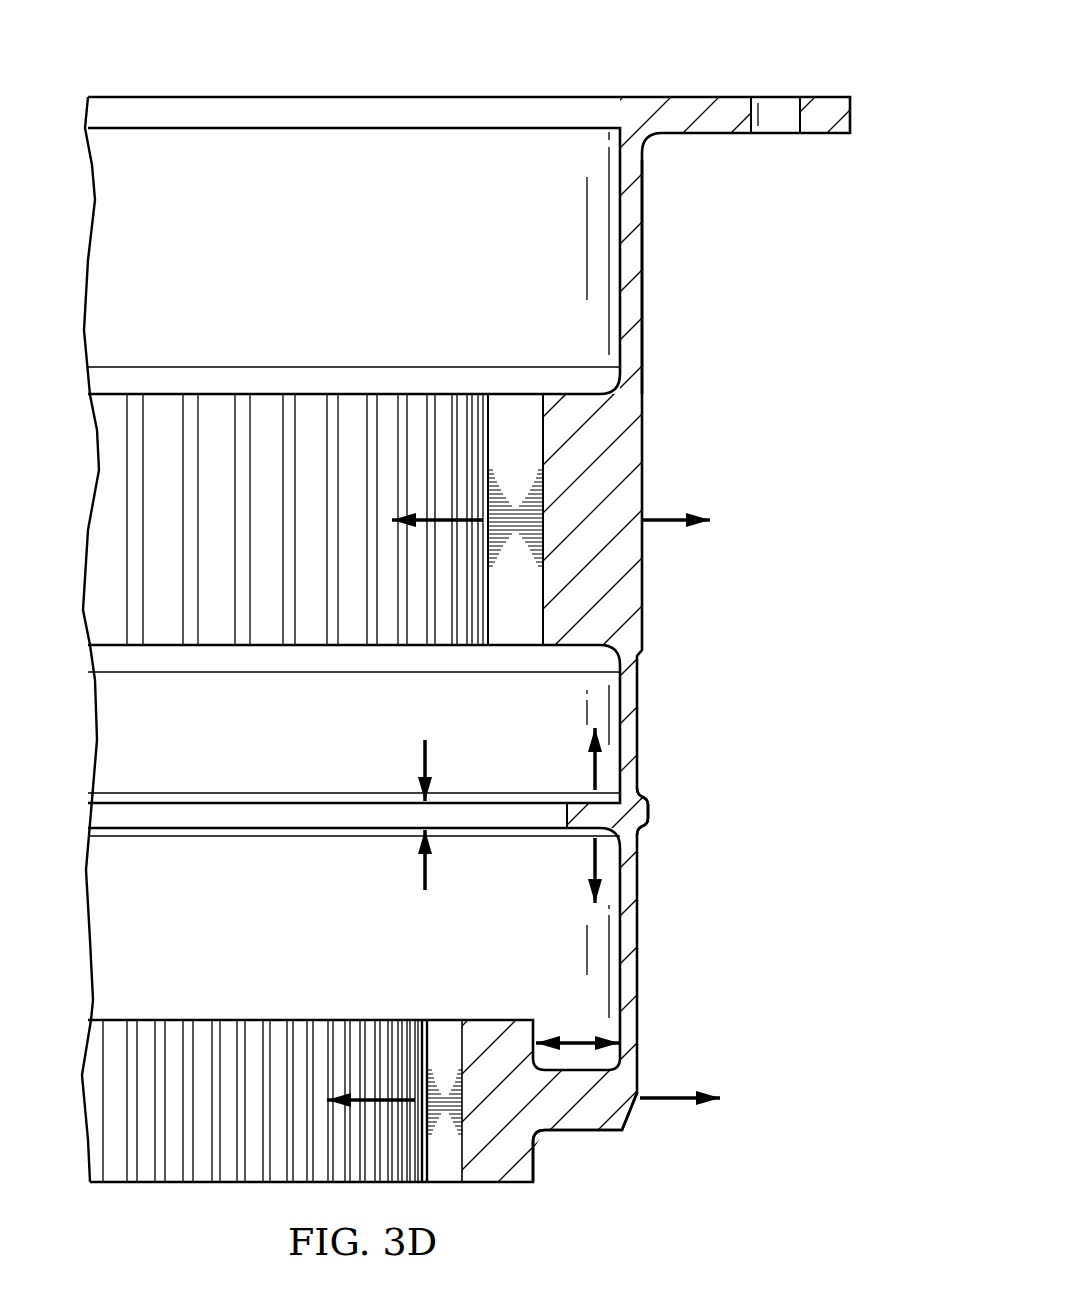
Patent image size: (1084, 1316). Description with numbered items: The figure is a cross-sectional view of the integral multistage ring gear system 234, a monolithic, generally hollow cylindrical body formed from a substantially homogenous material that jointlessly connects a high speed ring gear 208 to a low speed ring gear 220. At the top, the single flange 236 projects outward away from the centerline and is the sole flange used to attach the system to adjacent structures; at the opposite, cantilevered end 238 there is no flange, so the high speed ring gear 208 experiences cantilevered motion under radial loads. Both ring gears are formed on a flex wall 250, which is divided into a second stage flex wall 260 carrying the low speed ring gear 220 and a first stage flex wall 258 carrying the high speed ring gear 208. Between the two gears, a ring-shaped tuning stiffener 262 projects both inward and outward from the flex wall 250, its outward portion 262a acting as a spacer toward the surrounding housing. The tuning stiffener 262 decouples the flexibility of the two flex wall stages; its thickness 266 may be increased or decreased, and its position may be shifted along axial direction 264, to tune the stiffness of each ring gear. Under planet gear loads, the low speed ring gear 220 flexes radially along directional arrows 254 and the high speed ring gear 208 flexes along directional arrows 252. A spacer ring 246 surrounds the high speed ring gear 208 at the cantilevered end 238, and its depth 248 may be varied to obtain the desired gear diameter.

The integral multistage ring gear system 234 is at (268, 62).
The flange 236 is at (852, 110).
The low speed ring gear 220 is at (567, 393).
The flex wall 250 is at (643, 231).
The second stage flex wall 260 is at (643, 286).
The directional arrows 254 is at (654, 518).
The thickness 266 is at (428, 757).
The tuning stiffener 262 is at (577, 802).
The outward portion 262a is at (650, 812).
The axial direction 264 is at (593, 862).
The first stage flex wall 258 is at (638, 955).
The depth 248 is at (572, 1037).
The high speed ring gear 208 is at (478, 1019).
The directional arrows 252 is at (672, 1092).
The cantilevered end 238 is at (597, 1131).
The spacer ring 246 is at (558, 1132).